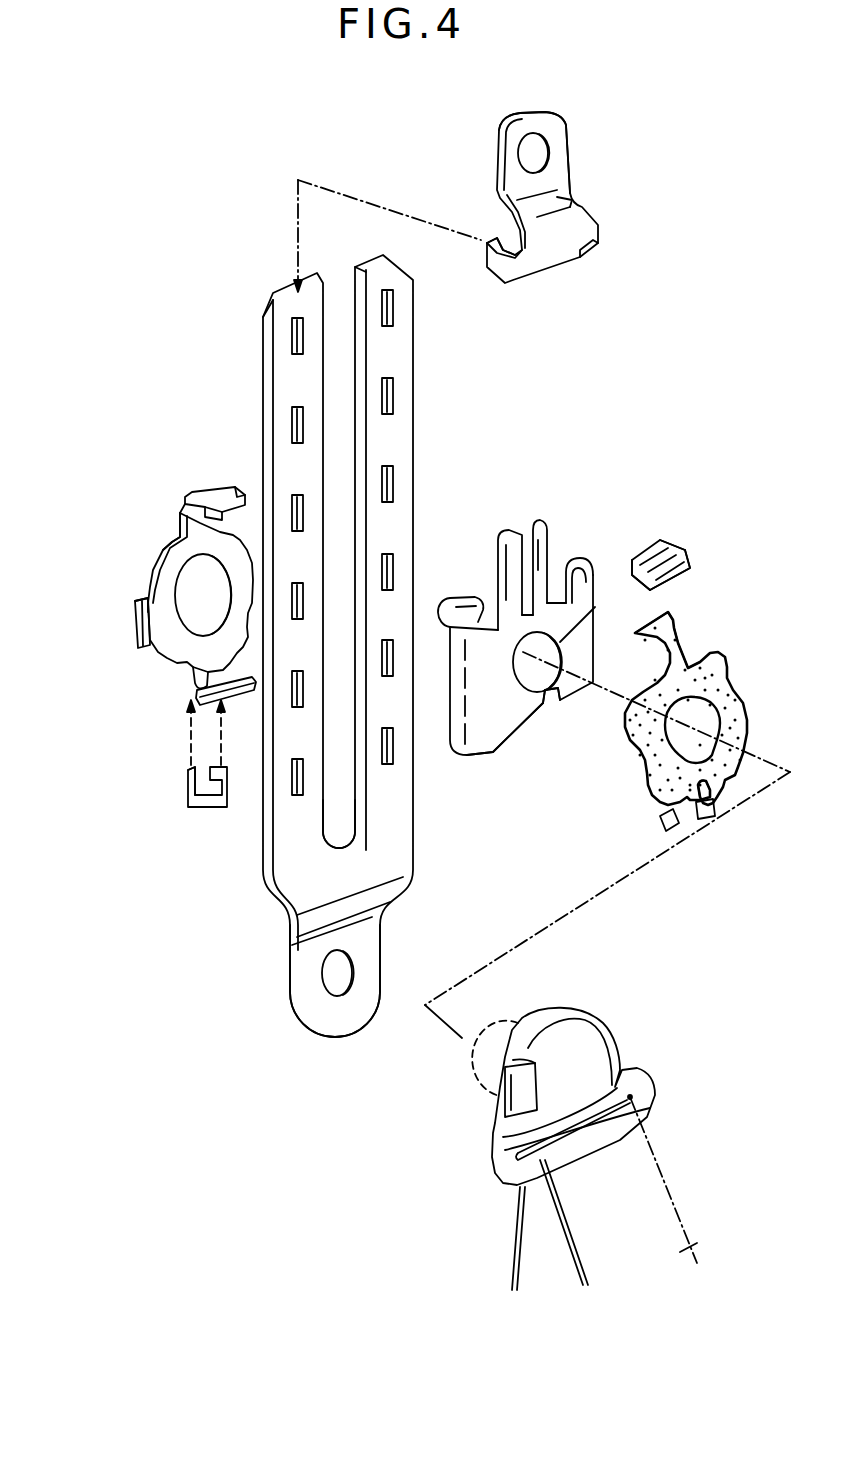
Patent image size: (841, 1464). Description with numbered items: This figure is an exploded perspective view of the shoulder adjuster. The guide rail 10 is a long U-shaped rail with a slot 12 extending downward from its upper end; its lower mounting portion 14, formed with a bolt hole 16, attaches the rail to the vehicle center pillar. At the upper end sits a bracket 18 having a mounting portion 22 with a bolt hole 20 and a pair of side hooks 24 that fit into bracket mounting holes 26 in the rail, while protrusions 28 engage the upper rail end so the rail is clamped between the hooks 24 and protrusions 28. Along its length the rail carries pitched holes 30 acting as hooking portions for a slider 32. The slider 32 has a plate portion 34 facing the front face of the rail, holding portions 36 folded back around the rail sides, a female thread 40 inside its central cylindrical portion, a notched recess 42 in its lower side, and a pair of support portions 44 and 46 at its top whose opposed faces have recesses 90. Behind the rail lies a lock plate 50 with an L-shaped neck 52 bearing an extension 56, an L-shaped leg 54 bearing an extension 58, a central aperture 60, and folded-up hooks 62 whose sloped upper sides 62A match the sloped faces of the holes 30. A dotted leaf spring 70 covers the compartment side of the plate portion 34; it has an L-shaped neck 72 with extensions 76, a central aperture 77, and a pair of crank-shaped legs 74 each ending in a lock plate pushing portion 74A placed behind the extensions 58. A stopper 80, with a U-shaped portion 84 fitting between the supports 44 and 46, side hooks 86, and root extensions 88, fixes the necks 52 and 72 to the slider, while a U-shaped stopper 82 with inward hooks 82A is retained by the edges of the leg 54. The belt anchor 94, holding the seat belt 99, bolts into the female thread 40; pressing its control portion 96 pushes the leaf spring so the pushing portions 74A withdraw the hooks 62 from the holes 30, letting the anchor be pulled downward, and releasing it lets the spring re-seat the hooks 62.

The guide rail 10 is at (412, 468).
The slot 12 is at (330, 815).
The mounting portion 14 is at (300, 977).
The bolt hole 16 is at (330, 990).
The bracket 18 is at (588, 215).
The bolt hole 20 is at (540, 152).
The mounting portion 22 is at (562, 150).
The hooks 24 is at (490, 240).
The bracket mounting holes 26 is at (300, 330).
The protrusions 28 is at (512, 205).
The holes 30 is at (395, 398).
The slider 32 is at (482, 765).
The plate portion 34 is at (500, 737).
The holding portions 36 is at (452, 598).
The female thread 40 is at (562, 652).
The notched recess 42 is at (558, 705).
The support portion 44 is at (546, 525).
The support portion 46 is at (505, 540).
The lock plate 50 is at (168, 545).
The L-shaped neck 52 is at (186, 496).
The L-shaped leg 54 is at (192, 693).
The extension 56 is at (213, 490).
The extension 58 is at (238, 702).
The aperture 60 is at (180, 580).
The hooks 62 is at (139, 642).
The sloped upper side 62A is at (136, 615).
The leaf spring 70 is at (723, 672).
The L-shaped neck 72 is at (683, 640).
The legs 74 is at (724, 782).
The lock plate pushing portion 74A is at (708, 822).
The extensions 76 is at (671, 614).
The aperture 77 is at (712, 722).
The stopper 80 is at (648, 548).
The stopper 82 is at (208, 808).
The hooks 82A is at (196, 780).
The U-shaped portion 84 is at (676, 553).
The hooks 86 is at (662, 548).
The extensions 88 is at (680, 558).
The recesses 90 is at (572, 560).
The belt anchor 94 is at (657, 1117).
The control portion 96 is at (495, 1090).
The seat belt 99 is at (697, 1252).